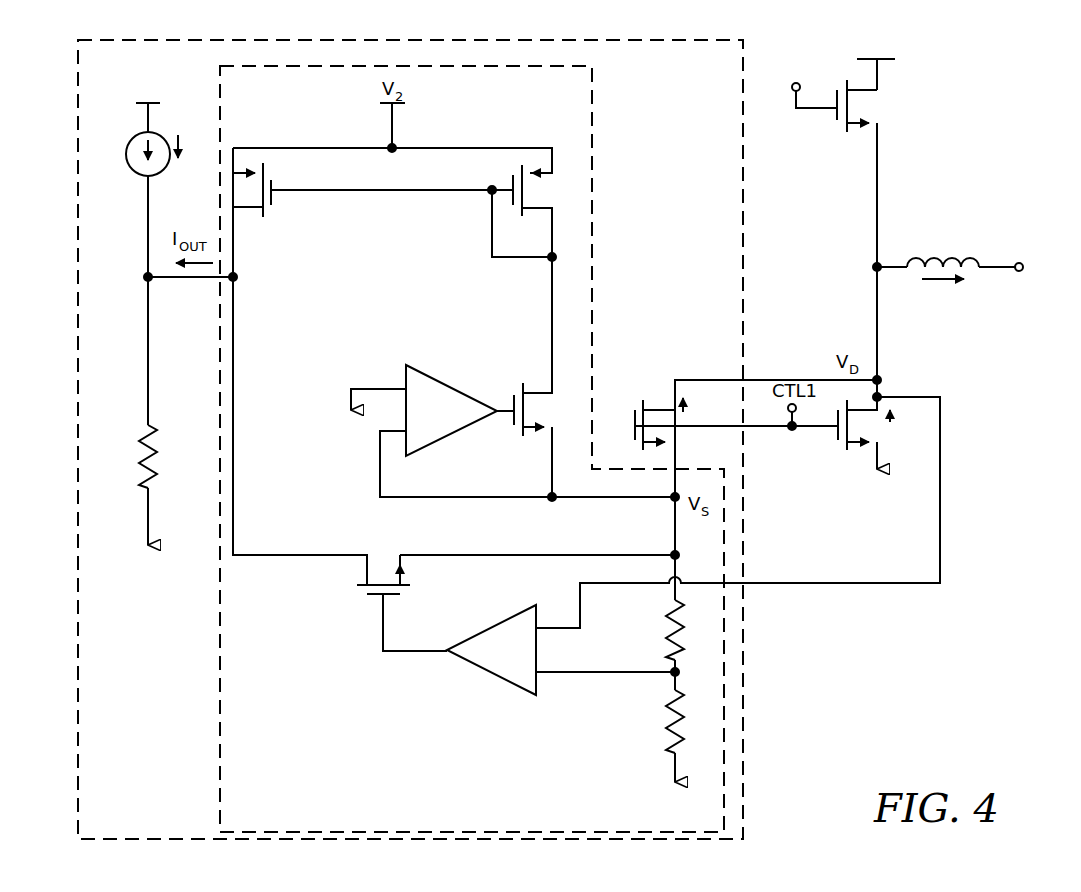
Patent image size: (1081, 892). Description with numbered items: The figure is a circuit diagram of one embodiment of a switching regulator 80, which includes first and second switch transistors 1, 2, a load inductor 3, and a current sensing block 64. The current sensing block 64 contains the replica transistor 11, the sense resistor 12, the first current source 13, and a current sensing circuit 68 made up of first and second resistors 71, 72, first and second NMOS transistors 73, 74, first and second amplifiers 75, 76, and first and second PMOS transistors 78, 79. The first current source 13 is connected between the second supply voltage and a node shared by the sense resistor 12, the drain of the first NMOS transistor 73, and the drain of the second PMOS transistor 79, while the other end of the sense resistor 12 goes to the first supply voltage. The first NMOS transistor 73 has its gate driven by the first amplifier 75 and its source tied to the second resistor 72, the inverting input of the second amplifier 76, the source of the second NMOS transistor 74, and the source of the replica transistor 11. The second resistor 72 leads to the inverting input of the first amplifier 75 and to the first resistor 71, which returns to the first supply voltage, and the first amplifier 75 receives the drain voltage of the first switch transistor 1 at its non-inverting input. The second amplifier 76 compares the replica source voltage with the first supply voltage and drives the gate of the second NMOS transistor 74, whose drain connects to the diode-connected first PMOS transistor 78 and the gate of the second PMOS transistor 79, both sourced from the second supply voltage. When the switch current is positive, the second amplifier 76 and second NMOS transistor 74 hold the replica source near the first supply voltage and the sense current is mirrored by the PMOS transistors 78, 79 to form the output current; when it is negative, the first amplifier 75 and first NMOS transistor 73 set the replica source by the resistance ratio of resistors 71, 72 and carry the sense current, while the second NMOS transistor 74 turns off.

The first switch transistor 1 is at (836, 440).
The second switch transistor 2 is at (836, 118).
The load inductor 3 is at (950, 259).
The replica transistor 11 is at (634, 418).
The sense resistor 12 is at (160, 460).
The first current source 13 is at (136, 134).
The current sensing block 64 is at (116, 40).
The current sensing circuit 68 is at (256, 66).
The first resistor 71 is at (668, 735).
The second resistor 72 is at (668, 641).
The first NMOS transistor 73 is at (376, 596).
The second NMOS transistor 74 is at (528, 418).
The first amplifier 75 is at (492, 676).
The second amplifier 76 is at (450, 433).
The first PMOS transistor 78 is at (528, 200).
The second PMOS transistor 79 is at (265, 215).
The switching regulator 80 is at (1000, 180).